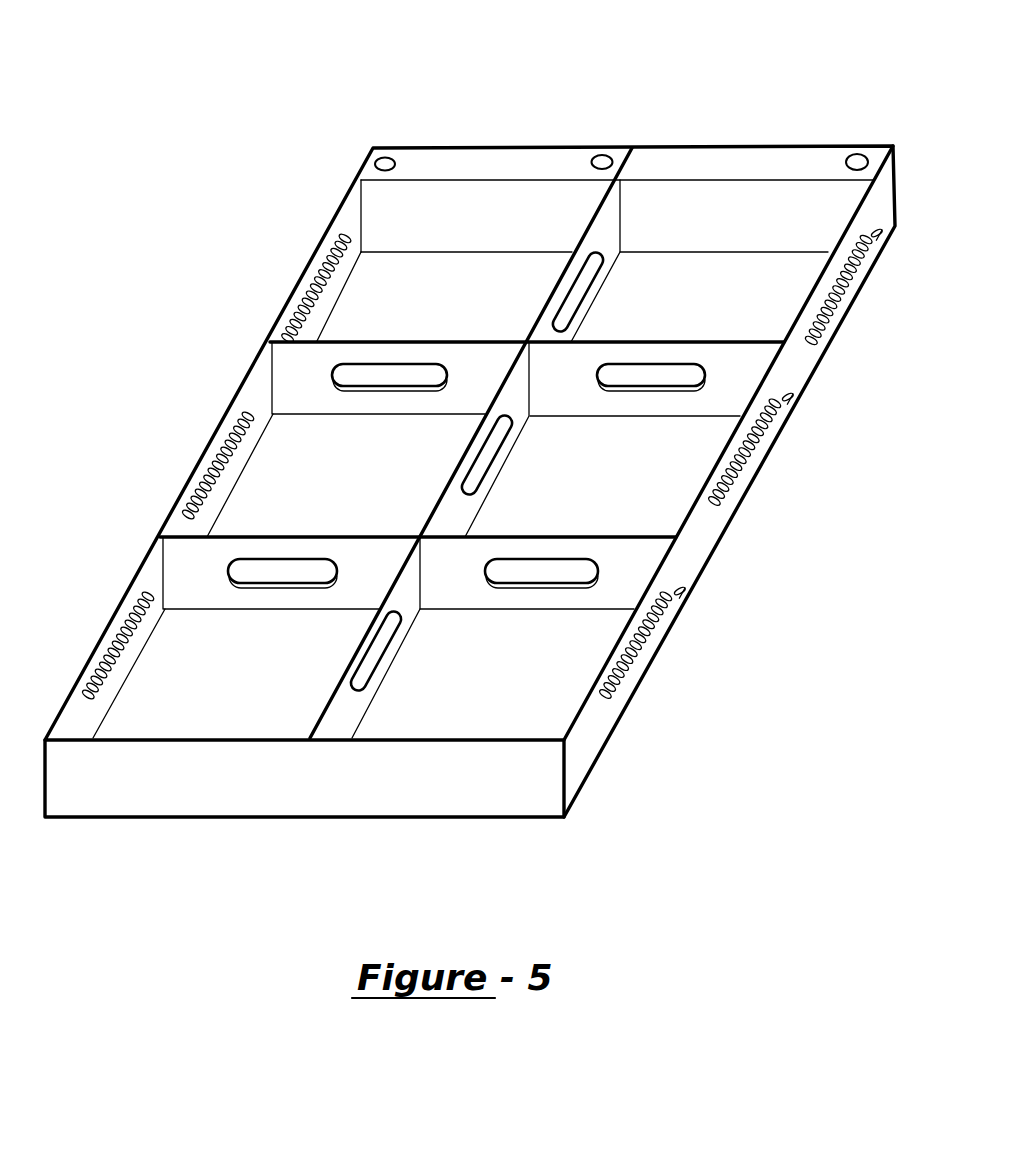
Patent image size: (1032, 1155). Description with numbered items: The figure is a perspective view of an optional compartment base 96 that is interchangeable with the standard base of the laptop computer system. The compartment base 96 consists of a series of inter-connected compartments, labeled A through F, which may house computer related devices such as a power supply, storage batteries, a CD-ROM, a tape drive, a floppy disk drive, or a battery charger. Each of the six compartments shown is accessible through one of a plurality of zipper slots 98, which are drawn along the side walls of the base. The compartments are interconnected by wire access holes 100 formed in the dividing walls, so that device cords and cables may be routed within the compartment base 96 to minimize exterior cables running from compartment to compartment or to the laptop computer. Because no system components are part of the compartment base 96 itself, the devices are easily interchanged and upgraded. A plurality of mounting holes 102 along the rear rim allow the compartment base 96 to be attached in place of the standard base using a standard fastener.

The compartment base 96 is at (504, 118).
The zipper slots 98 is at (327, 285).
The wire access holes 100 is at (335, 372).
The mounting holes 102 is at (375, 163).